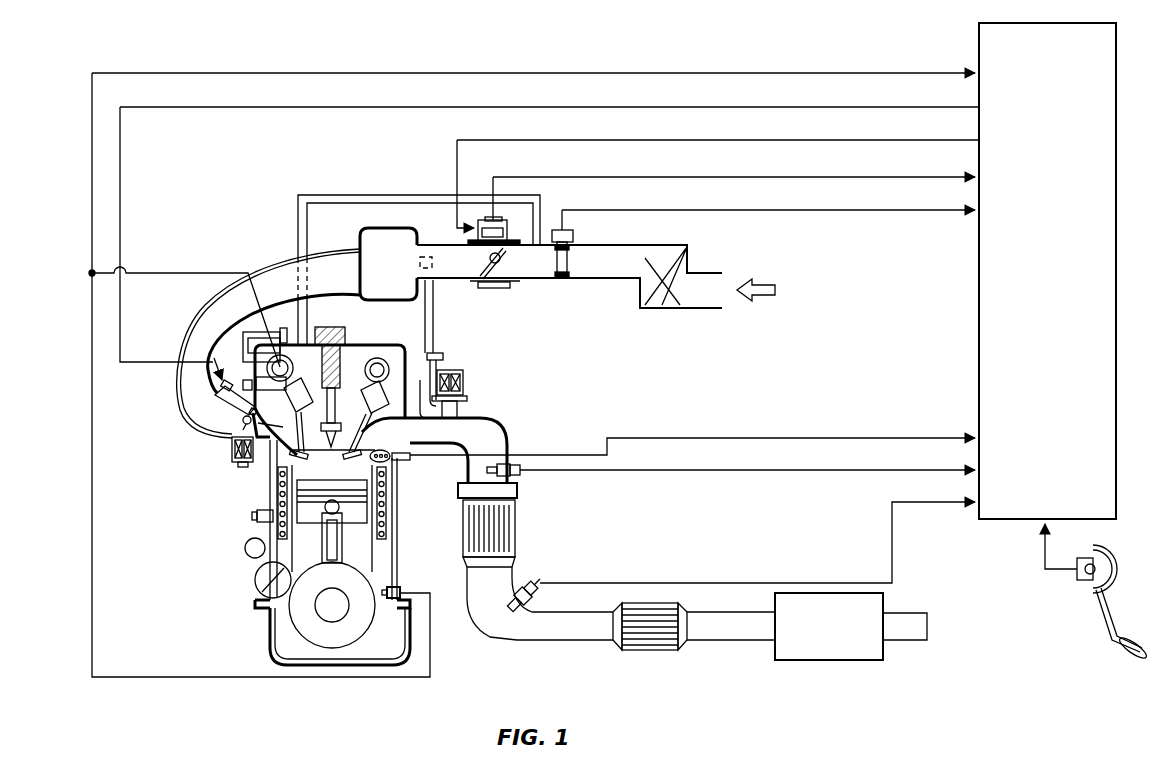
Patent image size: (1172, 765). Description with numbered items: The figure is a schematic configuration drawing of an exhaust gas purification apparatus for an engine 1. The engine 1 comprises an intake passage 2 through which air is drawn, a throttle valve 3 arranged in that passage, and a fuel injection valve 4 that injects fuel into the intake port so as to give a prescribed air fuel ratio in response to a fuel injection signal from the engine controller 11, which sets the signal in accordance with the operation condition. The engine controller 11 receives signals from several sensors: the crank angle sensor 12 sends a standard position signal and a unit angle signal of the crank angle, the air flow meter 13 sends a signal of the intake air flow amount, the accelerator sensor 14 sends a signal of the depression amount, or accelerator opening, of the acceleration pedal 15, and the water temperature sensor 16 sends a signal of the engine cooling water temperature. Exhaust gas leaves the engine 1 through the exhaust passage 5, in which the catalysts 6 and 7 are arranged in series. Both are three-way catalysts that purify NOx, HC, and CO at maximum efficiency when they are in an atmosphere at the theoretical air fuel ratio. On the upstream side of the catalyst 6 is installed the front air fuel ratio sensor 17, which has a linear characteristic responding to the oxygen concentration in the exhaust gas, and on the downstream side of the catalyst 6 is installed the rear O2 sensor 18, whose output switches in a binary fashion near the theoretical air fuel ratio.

The engine 1 is at (245, 226).
The intake passage 2 is at (618, 282).
The throttle valve 3 is at (503, 252).
The fuel injection valve 4 is at (219, 403).
The exhaust passage 5 is at (489, 413).
The catalyst 6 is at (512, 527).
The catalyst 7 is at (635, 647).
The engine controller 11 is at (1116, 293).
The crank angle sensor 12 is at (400, 585).
The air flow meter 13 is at (567, 262).
The accelerator sensor 14 is at (1077, 582).
The acceleration pedal 15 is at (1143, 638).
The water temperature sensor 16 is at (410, 460).
The front air fuel ratio sensor 17 is at (518, 467).
The rear O2 sensor 18 is at (533, 583).